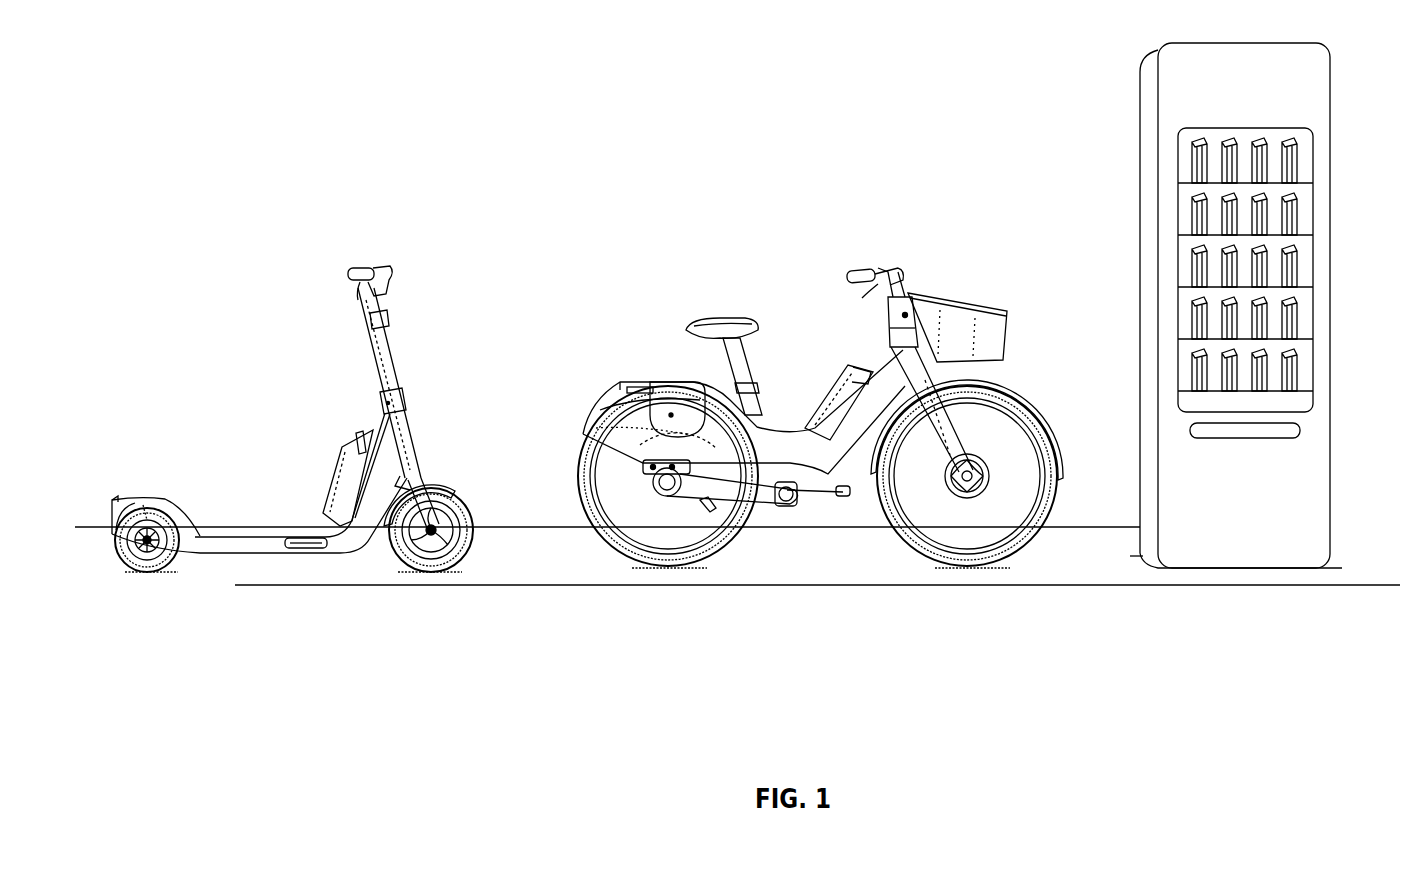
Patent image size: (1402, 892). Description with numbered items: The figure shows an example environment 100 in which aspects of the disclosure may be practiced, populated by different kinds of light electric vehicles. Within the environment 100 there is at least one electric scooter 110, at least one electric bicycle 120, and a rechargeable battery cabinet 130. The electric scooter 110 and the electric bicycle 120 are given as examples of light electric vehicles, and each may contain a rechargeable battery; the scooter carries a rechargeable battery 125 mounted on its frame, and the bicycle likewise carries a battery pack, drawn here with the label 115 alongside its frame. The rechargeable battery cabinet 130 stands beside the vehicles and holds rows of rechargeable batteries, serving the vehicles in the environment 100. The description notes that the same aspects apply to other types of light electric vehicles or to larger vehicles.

The environment 100 is at (352, 45).
The electric scooter 110 is at (292, 415).
The scooter battery pack 115 is at (330, 488).
The electric bicycle 120 is at (820, 417).
The rechargeable battery 125 is at (853, 374).
The rechargeable battery cabinet 130 is at (1143, 97).